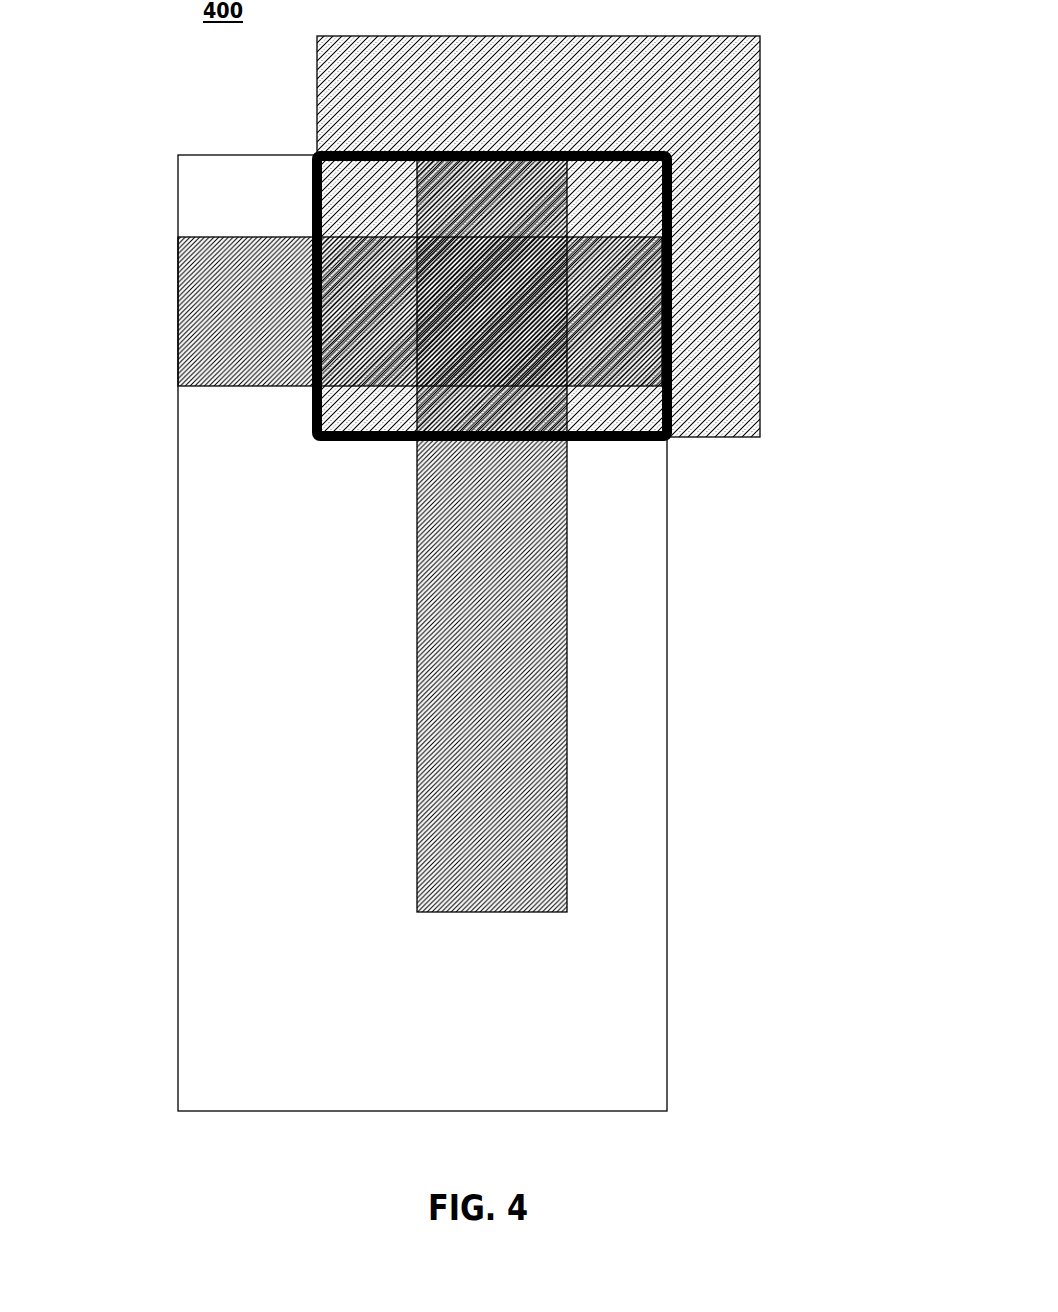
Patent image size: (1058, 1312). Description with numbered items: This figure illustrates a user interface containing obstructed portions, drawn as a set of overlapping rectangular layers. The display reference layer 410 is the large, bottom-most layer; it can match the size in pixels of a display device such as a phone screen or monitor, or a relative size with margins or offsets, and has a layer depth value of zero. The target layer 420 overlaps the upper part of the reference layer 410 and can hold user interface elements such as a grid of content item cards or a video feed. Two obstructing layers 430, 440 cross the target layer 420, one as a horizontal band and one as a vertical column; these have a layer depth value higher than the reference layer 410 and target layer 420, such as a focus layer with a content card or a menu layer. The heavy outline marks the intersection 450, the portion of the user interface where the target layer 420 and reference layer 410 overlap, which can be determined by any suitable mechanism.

The display reference layer 410 is at (177, 498).
The target layer 420 is at (760, 197).
The obstructing layer 430 is at (253, 387).
The obstructing layer 440 is at (417, 640).
The intersection 450 is at (672, 274).